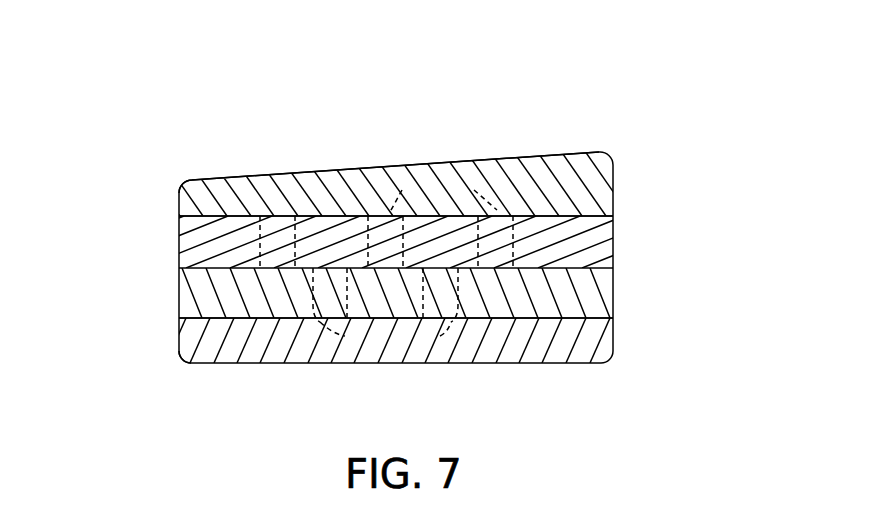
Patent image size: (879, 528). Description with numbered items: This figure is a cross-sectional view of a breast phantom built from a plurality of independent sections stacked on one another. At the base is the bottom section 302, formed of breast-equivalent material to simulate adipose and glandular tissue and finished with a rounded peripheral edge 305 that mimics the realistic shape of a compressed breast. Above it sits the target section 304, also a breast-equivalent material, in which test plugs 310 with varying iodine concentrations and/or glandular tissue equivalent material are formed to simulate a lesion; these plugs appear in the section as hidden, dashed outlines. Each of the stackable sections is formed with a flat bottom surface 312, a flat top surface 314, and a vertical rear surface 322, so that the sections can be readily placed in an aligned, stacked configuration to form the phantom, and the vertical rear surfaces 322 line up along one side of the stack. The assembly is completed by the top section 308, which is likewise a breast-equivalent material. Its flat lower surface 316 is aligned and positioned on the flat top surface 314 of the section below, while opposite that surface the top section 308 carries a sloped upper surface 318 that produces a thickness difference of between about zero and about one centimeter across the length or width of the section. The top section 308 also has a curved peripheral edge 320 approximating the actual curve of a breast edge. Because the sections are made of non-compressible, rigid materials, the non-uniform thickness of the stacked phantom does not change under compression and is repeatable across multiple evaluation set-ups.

The bottom section 302 is at (282, 349).
The target section 304 is at (620, 243).
The rounded peripheral edge 305 is at (182, 362).
The top section 308 is at (559, 154).
The test plugs 310 is at (476, 190).
The flat bottom surface 312 is at (200, 318).
The flat top surface 314 is at (198, 268).
The flat lower surface 316 is at (225, 213).
The sloped upper surface 318 is at (350, 171).
The curved peripheral edge 320 is at (183, 181).
The vertical rear surface 322 is at (613, 225).